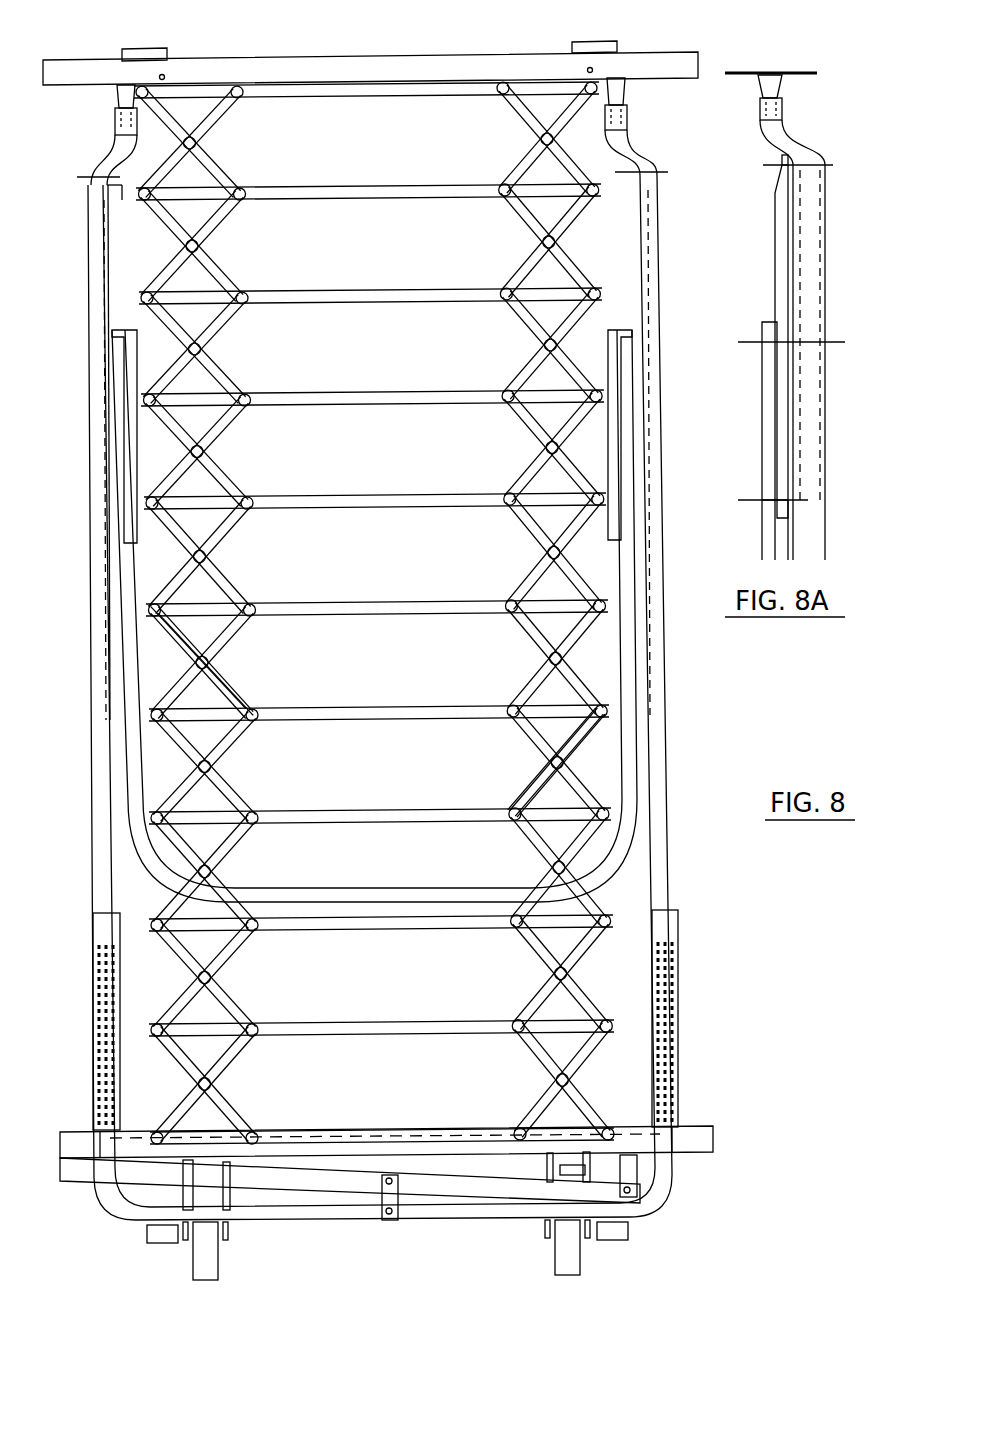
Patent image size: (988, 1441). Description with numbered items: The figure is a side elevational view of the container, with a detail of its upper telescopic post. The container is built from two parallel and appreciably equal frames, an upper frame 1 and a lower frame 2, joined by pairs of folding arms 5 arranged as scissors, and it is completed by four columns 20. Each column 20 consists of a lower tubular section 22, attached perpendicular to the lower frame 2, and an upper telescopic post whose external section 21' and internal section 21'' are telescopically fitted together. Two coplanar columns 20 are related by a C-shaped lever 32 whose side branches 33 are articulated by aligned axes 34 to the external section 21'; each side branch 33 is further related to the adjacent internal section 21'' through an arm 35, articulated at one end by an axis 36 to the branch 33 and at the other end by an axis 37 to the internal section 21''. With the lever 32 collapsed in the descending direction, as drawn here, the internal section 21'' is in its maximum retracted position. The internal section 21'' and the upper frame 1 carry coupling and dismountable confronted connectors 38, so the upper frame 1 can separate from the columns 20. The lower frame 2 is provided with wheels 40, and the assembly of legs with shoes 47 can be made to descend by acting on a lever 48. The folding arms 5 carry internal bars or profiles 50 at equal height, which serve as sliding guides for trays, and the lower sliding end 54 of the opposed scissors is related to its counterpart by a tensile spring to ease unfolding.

In FIG. 8, the upper frame 1 is at (260, 65).
In FIG. 8, the lower frame 2 is at (692, 1138).
In FIG. 8, the folding arms 5 is at (182, 642).
In FIG. 8, the columns 20 is at (80, 778).
In FIG. 8A, the external section 21' is at (829, 362).
In FIG. 8A, the internal section 21'' is at (833, 138).
In FIG. 8, the lower tubular section 22 is at (97, 1010).
In FIG. 8, the C-shaped lever 32 is at (612, 845).
In FIG. 8A, the side branches 33 is at (767, 430).
In FIG. 8A, the aligned axes 34 is at (834, 341).
In FIG. 8A, the arm 35 is at (780, 245).
In FIG. 8A, the axis 36 is at (750, 501).
In FIG. 8A, the axis 37 is at (765, 165).
In FIG. 8A, the coupling and dismountable confronted connectors 38 is at (770, 83).
In FIG. 8, the wheels 40 is at (205, 1262).
In FIG. 8, the shoes 47 is at (145, 1235).
In FIG. 8, the lever 48 is at (80, 1173).
In FIG. 8, the internal bars or profiles 50 is at (315, 497).
In FIG. 8, the lower sliding end 54 is at (260, 1134).